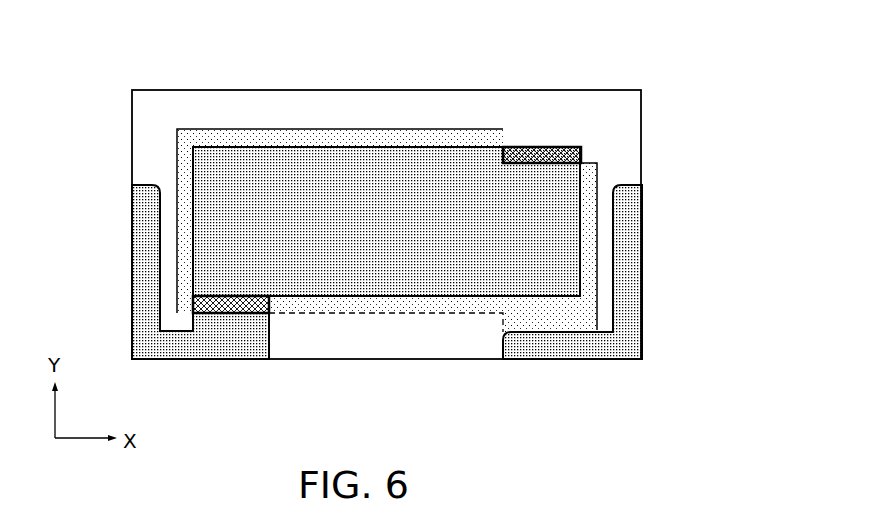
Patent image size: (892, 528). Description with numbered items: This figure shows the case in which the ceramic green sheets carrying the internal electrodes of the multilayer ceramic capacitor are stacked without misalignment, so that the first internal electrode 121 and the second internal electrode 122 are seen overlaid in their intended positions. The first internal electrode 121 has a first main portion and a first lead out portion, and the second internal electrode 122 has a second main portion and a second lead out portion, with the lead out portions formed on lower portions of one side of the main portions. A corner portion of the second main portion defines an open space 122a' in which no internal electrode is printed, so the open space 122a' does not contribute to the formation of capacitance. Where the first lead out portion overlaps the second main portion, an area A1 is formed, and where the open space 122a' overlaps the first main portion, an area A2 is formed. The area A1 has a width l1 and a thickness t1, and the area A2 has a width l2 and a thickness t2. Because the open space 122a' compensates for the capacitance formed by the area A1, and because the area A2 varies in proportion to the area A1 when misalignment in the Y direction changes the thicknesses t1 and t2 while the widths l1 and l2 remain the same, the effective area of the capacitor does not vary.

The first internal electrode 121 is at (318, 137).
The second internal electrode 122 is at (366, 120).
The open space 122a' is at (572, 91).
The area in which the first lead out portion and the second main portion overlap A1 is at (250, 315).
The area in which the open space and the first main portion overlap A2 is at (517, 146).
The thickness of area A1 t1 is at (193, 313).
The thickness of area A2 t2 is at (582, 146).
The width of the first lead out portion l1 is at (193, 359).
The width of area A2 l2 is at (582, 147).